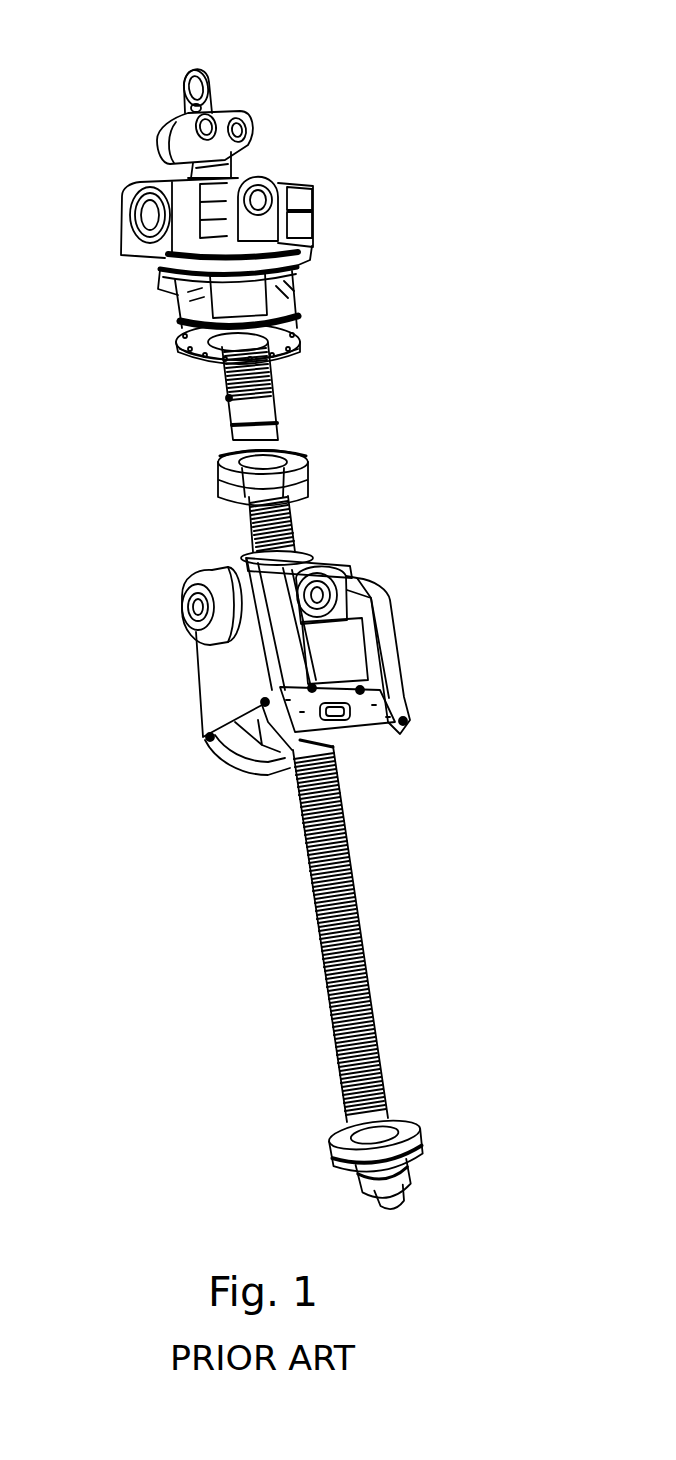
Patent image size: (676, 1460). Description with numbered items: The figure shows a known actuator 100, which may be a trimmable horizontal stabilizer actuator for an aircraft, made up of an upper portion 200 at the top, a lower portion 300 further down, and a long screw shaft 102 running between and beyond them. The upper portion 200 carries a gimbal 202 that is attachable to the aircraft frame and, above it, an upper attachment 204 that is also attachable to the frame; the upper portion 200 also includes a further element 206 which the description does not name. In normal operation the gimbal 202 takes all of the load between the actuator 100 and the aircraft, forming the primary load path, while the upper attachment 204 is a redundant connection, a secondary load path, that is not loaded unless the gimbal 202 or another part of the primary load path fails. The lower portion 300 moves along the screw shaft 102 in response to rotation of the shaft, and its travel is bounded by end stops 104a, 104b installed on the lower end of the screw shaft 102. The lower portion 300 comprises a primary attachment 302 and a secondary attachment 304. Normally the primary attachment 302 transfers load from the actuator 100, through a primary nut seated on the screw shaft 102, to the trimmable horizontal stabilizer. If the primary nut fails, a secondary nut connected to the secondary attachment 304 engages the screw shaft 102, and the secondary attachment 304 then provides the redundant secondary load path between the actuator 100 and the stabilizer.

The actuator 100 is at (337, 98).
The upper portion 200 is at (395, 97).
The gimbal 202 is at (150, 197).
The upper attachment 204 is at (223, 120).
The lower housing flange 206 is at (281, 297).
The end stop 104b is at (291, 467).
The lower portion 300 is at (453, 553).
The primary attachment 302 is at (218, 628).
The secondary attachment 304 is at (360, 728).
The screw shaft 102 is at (372, 998).
The end stop 104a is at (395, 1136).